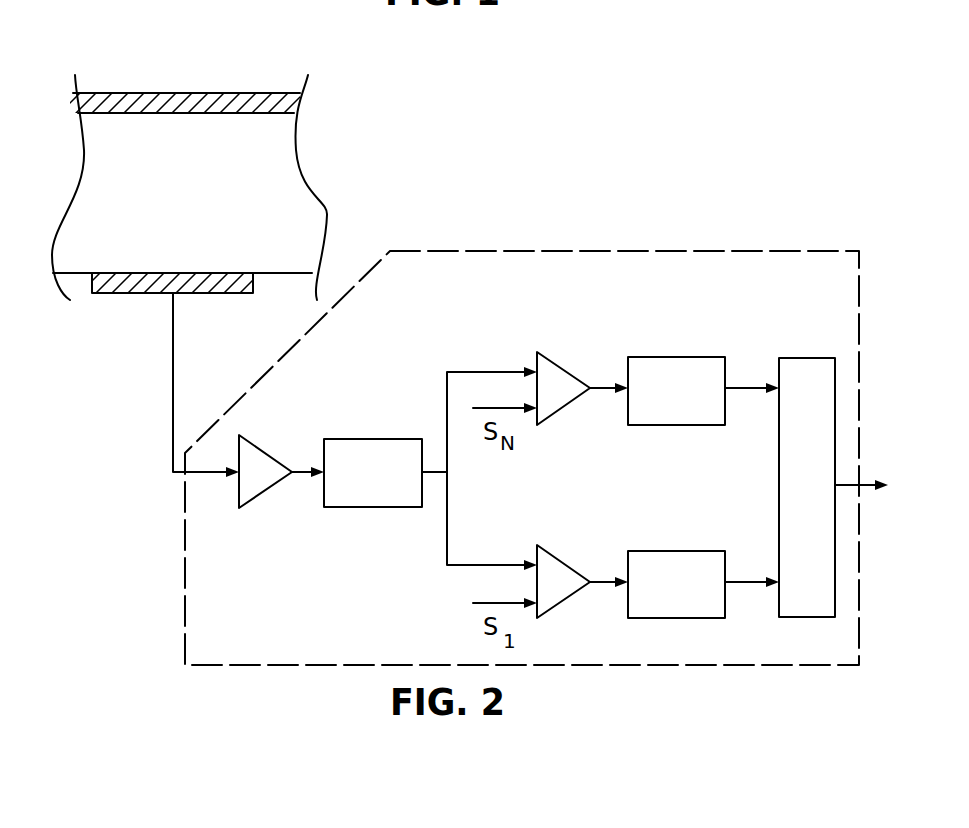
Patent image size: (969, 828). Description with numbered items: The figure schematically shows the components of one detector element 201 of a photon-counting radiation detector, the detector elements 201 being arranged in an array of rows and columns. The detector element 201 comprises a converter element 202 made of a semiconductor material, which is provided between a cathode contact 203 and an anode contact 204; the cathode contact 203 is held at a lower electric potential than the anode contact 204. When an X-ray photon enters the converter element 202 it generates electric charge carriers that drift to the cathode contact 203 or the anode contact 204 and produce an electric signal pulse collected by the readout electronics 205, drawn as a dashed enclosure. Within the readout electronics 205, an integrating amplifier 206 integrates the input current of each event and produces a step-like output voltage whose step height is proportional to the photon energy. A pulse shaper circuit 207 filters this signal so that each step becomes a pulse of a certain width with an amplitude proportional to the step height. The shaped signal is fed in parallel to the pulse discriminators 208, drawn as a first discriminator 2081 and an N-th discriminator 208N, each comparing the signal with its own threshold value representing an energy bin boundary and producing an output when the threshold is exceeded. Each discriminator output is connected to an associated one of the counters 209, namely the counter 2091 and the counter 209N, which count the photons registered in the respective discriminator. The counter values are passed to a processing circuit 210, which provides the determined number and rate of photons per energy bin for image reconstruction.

The detector element 201 is at (572, 176).
The converter element 202 is at (212, 181).
The cathode contact 203 is at (190, 97).
The anode contact 204 is at (140, 293).
The readout electronics 205 is at (183, 515).
The integrating amplifier 206 is at (260, 447).
The pulse shaper circuit 207 is at (385, 485).
The pulse discriminators 208 is at (596, 444).
The pulse discriminator 208N is at (563, 367).
The pulse discriminator 2081 is at (563, 561).
The counters 209 is at (676, 487).
The counter 209N is at (692, 404).
The counter 2091 is at (692, 598).
The processing circuit 210 is at (817, 358).